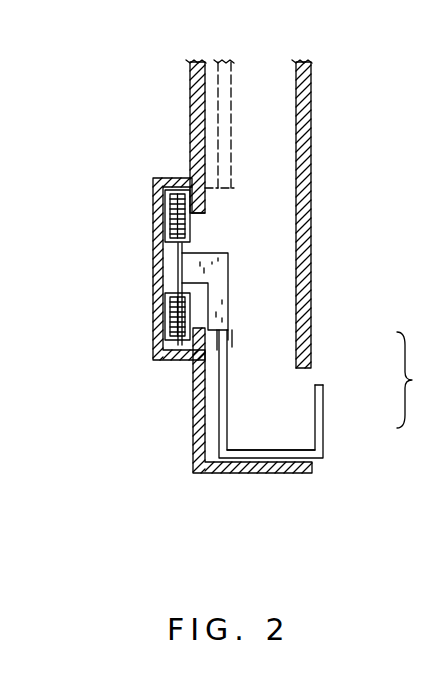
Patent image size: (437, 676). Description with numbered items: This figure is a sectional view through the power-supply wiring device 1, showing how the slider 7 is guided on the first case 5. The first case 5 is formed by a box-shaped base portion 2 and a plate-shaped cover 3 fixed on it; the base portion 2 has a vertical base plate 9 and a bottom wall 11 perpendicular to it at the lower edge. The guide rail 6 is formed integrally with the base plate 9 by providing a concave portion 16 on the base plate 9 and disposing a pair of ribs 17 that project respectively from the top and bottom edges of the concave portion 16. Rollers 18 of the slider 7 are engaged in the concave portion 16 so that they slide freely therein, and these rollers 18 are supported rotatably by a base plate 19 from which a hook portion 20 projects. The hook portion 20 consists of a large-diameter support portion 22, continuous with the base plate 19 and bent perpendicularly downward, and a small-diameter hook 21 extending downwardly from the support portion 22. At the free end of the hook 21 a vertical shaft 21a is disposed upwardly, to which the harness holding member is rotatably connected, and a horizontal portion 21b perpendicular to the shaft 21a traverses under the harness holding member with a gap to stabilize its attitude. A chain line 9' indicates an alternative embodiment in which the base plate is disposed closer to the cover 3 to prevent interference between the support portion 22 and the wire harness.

The power-supply wiring device 1 is at (428, 544).
The base portion 2 is at (313, 465).
The cover 3 is at (310, 327).
The first case 5 is at (412, 380).
The guide rail 6 is at (155, 177).
The slider 7 is at (172, 285).
The base plate 9 is at (146, 133).
The chain line 9' is at (242, 116).
The bottom wall 11 is at (273, 473).
The concave portion 16 is at (163, 272).
The ribs 17 is at (205, 205).
The rollers 18 is at (170, 332).
The base plate 19 is at (163, 238).
The hook portion 20 is at (236, 360).
The hook 21 is at (233, 400).
The shaft 21a is at (312, 400).
The horizontal portion 21b is at (253, 447).
The support portion 22 is at (230, 283).